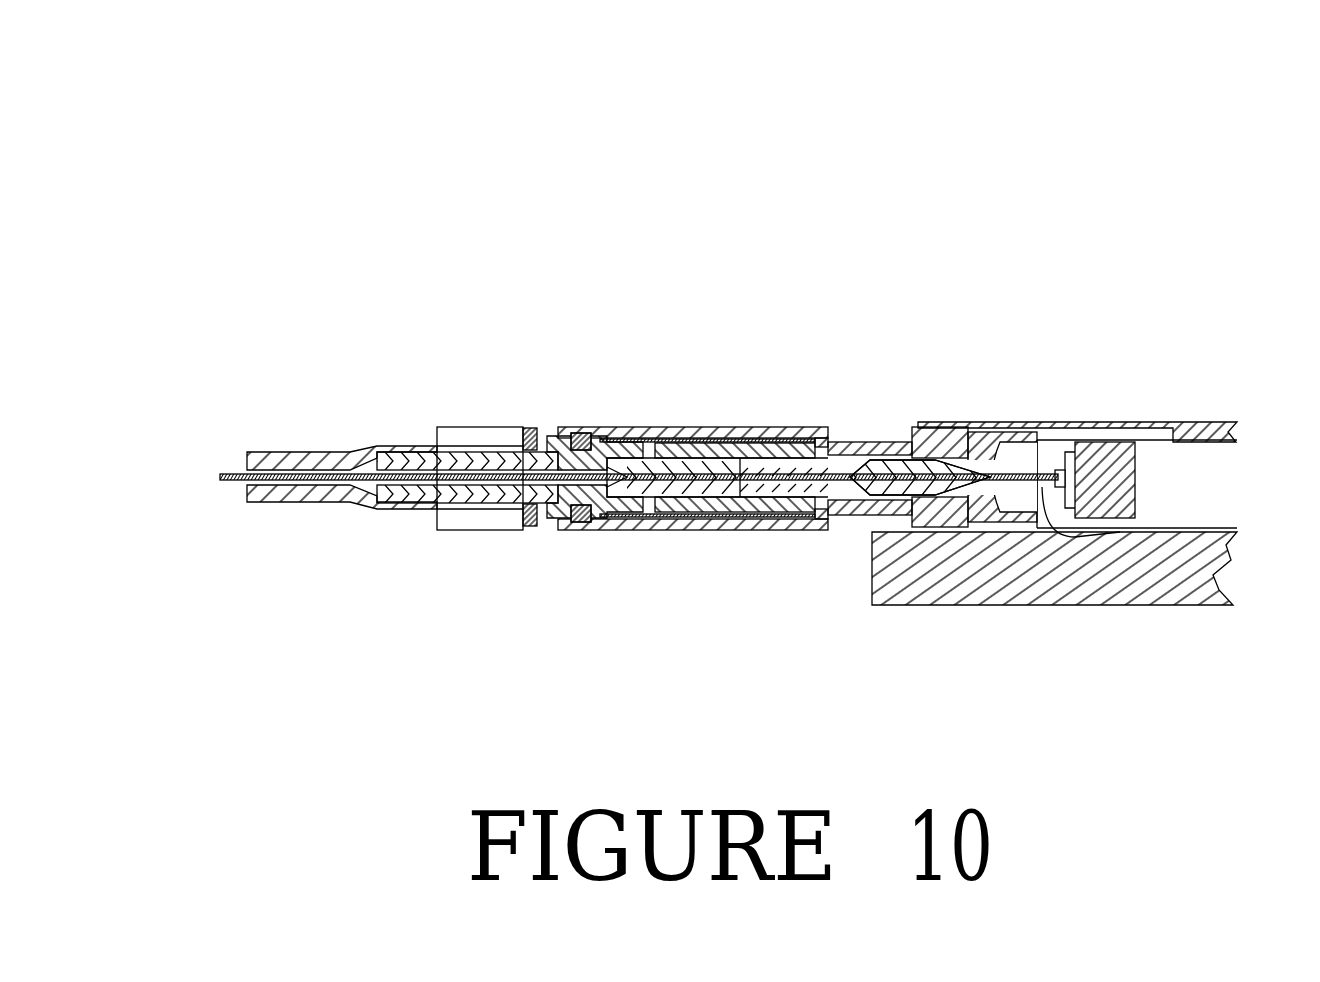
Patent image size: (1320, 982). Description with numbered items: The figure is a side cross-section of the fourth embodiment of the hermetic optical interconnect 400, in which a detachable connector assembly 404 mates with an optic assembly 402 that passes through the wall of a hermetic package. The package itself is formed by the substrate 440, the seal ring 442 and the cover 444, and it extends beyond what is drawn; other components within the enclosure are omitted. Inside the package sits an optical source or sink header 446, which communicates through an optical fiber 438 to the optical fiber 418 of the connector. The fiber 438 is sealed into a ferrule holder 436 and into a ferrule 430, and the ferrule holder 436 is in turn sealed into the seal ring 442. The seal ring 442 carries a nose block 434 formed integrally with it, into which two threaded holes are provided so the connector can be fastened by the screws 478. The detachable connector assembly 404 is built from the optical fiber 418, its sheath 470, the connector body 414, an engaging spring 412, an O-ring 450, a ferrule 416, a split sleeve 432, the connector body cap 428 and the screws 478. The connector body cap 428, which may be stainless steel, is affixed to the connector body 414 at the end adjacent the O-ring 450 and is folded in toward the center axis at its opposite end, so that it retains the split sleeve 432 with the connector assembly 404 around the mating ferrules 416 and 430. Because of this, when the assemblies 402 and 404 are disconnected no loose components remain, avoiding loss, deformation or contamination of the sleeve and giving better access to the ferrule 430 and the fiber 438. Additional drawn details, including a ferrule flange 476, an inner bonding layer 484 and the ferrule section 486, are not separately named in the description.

The fiber optic connector assembly 400 is at (333, 53).
The optic assembly 402 is at (1203, 207).
The detachable connector assembly 404 is at (250, 664).
The engaging spring 412 is at (523, 437).
The connector body 414 is at (445, 455).
The ferrule 416 is at (632, 490).
The optical fiber 418 is at (230, 478).
The connector body cap 428 is at (797, 447).
The ferrule 430 is at (845, 487).
The split sleeve 432 is at (797, 512).
The nose block 434 is at (885, 445).
The ferrule holder 436 is at (993, 438).
The optical fiber 438 is at (1120, 532).
The substrate 440 is at (1042, 588).
The seal ring 442 is at (943, 443).
The cover 444 is at (1105, 425).
The optical source or sink header 446 is at (1135, 463).
The O-ring 450 is at (583, 522).
The sheath 470 is at (405, 505).
The ferrule holder 476 is at (653, 512).
The screws 478 is at (467, 437).
The adhesive layer 484 is at (621, 445).
The ferrule 486 is at (970, 520).